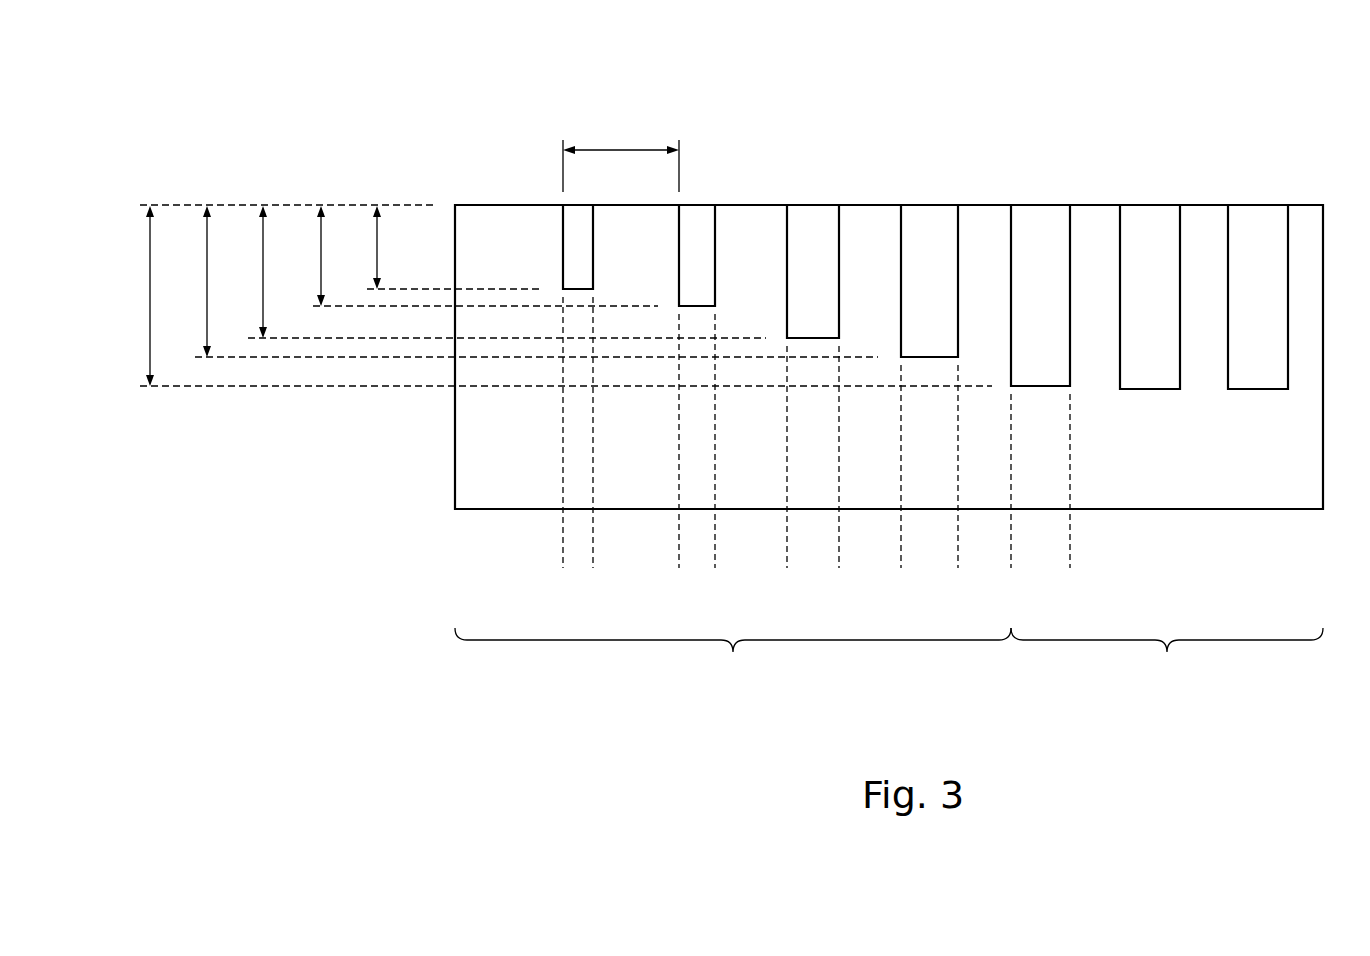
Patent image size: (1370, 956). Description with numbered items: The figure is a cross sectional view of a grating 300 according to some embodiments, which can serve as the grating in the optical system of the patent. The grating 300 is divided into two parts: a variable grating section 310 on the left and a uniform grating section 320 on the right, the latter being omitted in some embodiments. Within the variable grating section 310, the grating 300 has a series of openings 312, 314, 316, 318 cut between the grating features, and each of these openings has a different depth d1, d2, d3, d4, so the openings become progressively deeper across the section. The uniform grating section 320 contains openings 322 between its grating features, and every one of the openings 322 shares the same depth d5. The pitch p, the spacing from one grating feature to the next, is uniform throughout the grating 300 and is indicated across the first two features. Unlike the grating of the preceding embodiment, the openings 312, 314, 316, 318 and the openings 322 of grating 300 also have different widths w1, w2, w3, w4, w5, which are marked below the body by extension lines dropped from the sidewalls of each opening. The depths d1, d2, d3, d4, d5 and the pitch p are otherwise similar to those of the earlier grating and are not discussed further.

The grating 300 is at (307, 102).
The variable grating section 310 is at (733, 659).
The opening 312 is at (563, 223).
The opening 314 is at (697, 223).
The opening 316 is at (812, 223).
The opening 318 is at (930, 223).
The uniform grating section 320 is at (1167, 659).
The openings 322 is at (1042, 227).
The pitch p is at (621, 152).
The depth d1 is at (360, 247).
The depth d2 is at (303, 256).
The depth d3 is at (246, 272).
The depth d4 is at (190, 281).
The depth d5 is at (133, 296).
The width w1 is at (577, 454).
The width w2 is at (697, 462).
The width w3 is at (813, 478).
The width w4 is at (929, 488).
The width w5 is at (1040, 502).